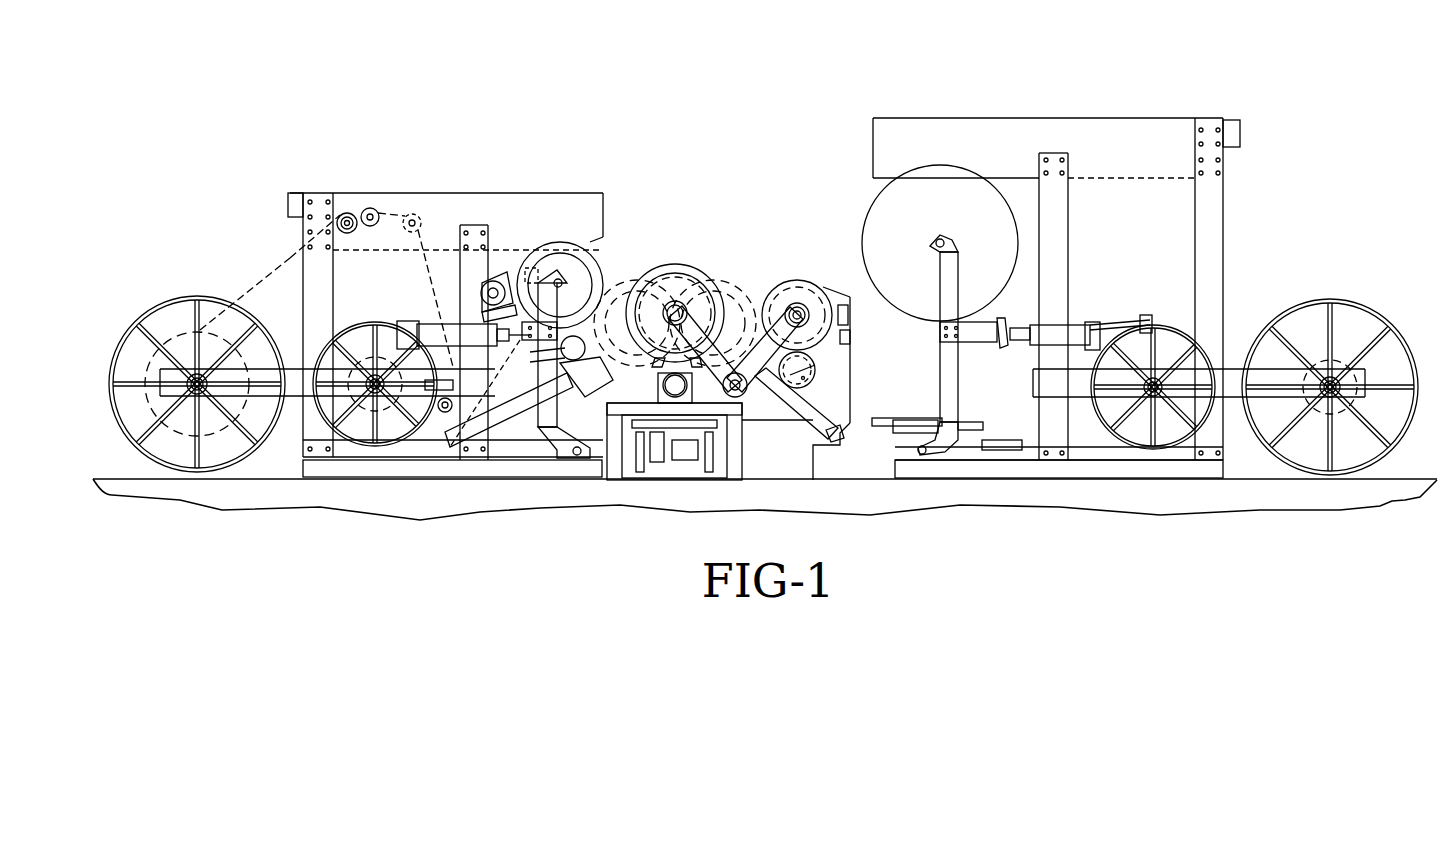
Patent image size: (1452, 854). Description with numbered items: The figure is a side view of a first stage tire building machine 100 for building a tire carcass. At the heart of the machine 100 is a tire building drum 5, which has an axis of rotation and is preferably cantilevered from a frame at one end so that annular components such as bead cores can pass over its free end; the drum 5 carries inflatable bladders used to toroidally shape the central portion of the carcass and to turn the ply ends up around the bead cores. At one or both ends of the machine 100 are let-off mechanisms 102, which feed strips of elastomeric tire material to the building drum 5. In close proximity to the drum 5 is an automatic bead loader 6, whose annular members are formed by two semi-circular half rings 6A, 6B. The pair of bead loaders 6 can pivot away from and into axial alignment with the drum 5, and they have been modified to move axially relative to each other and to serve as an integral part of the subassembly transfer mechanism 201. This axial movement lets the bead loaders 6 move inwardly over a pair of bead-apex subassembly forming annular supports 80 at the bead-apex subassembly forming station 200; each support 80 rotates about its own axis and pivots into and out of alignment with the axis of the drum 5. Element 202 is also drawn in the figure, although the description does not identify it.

The tire building machine 100 is at (762, 215).
The mechanisms 102 is at (418, 192).
The subassembly transfer mechanism 201 is at (522, 236).
The bead loader 6 is at (566, 250).
The semi-circular half ring 6A is at (628, 280).
The semi-circular half ring 6B is at (723, 282).
The tire building drum 5 is at (675, 265).
The bead-apex subassembly forming station 200 is at (782, 270).
The bead-apex subassembly forming annular support 80 is at (801, 288).
The roller 202 is at (798, 387).